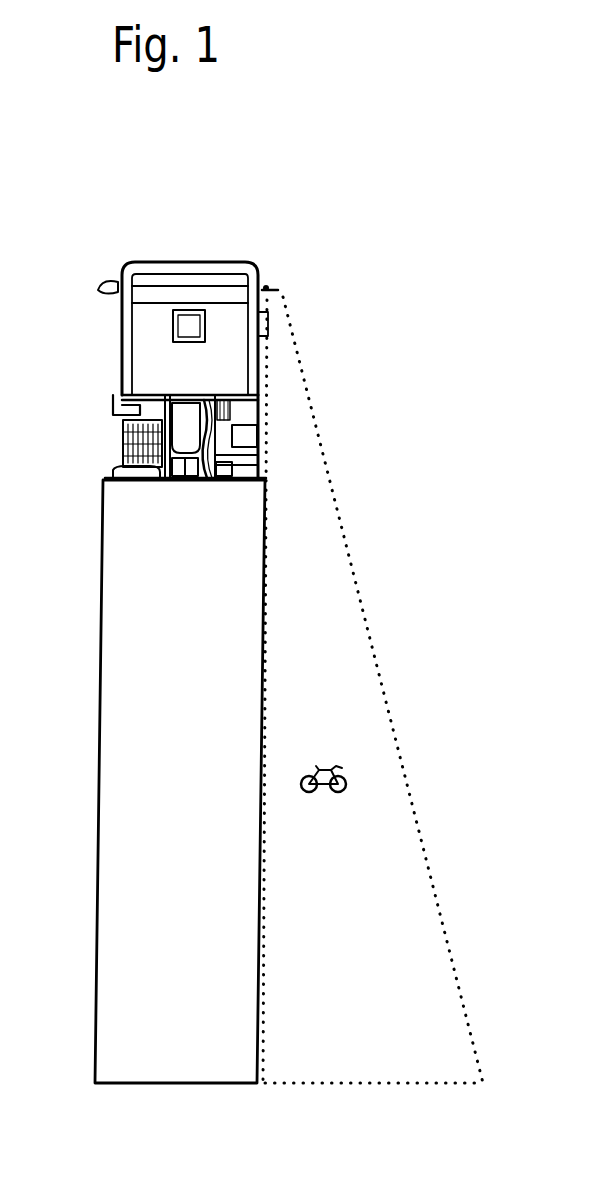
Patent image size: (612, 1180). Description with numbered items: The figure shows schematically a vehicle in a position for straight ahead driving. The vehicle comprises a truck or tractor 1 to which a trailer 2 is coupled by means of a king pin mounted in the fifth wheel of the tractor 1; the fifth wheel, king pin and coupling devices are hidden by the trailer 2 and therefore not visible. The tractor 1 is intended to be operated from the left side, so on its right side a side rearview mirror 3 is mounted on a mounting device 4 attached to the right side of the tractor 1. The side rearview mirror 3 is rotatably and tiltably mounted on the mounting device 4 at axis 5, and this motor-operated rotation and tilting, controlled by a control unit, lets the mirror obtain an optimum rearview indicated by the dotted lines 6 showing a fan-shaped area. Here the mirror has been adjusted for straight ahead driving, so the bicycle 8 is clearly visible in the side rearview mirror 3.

The tractor 1 is at (112, 368).
The trailer 2 is at (96, 770).
The side rearview mirror 3 is at (268, 286).
The mounting device 4 is at (266, 286).
The axis 5 is at (278, 290).
The dotted lines 6 is at (392, 722).
The bicycle 8 is at (323, 798).